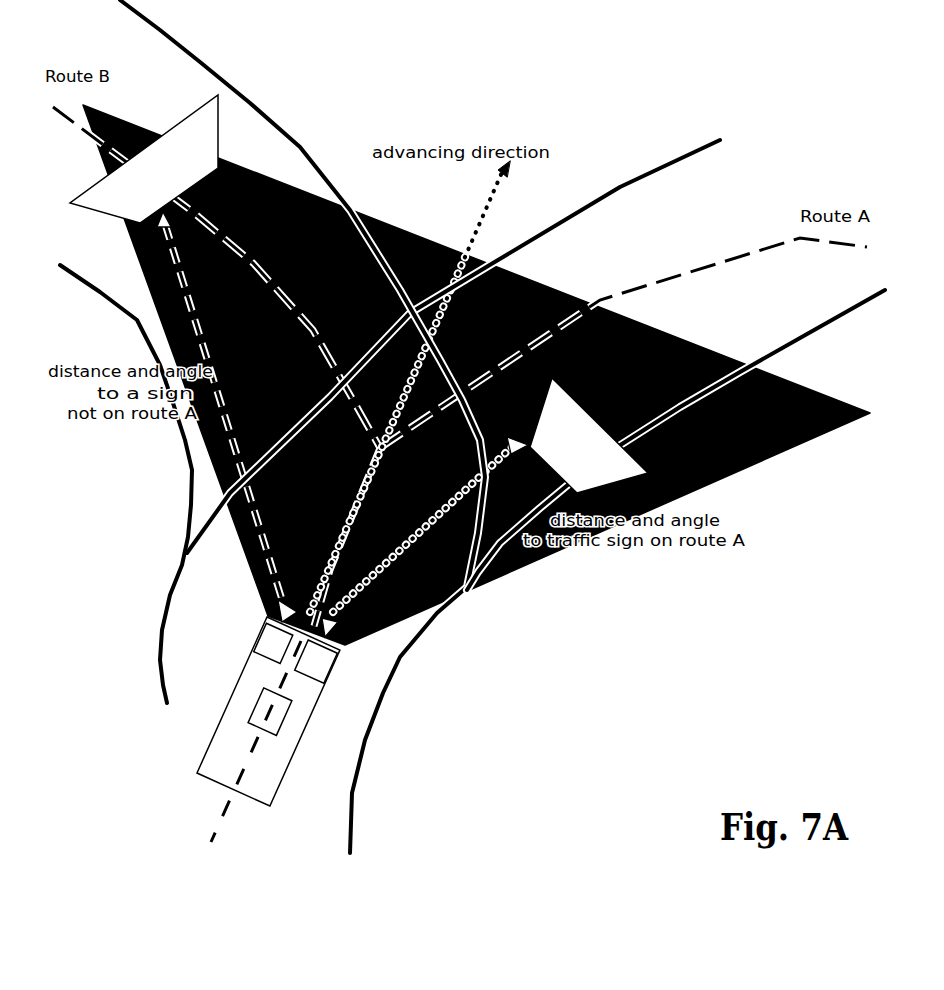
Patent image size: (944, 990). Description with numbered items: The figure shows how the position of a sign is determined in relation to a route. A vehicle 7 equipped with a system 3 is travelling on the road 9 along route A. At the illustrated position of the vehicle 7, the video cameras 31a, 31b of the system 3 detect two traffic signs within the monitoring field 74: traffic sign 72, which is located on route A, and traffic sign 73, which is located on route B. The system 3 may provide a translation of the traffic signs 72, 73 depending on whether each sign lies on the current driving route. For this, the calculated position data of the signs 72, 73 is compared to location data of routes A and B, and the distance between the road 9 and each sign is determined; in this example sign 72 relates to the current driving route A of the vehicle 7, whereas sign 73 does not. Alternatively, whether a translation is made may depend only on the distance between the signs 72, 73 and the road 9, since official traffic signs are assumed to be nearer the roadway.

The system 3 is at (293, 700).
The vehicle 7 is at (298, 752).
The road 9 is at (867, 303).
The video camera 31a is at (348, 642).
The video camera 31b is at (270, 623).
The traffic sign 72 is at (733, 467).
The traffic sign 73 is at (108, 218).
The monitoring field 74 is at (833, 435).